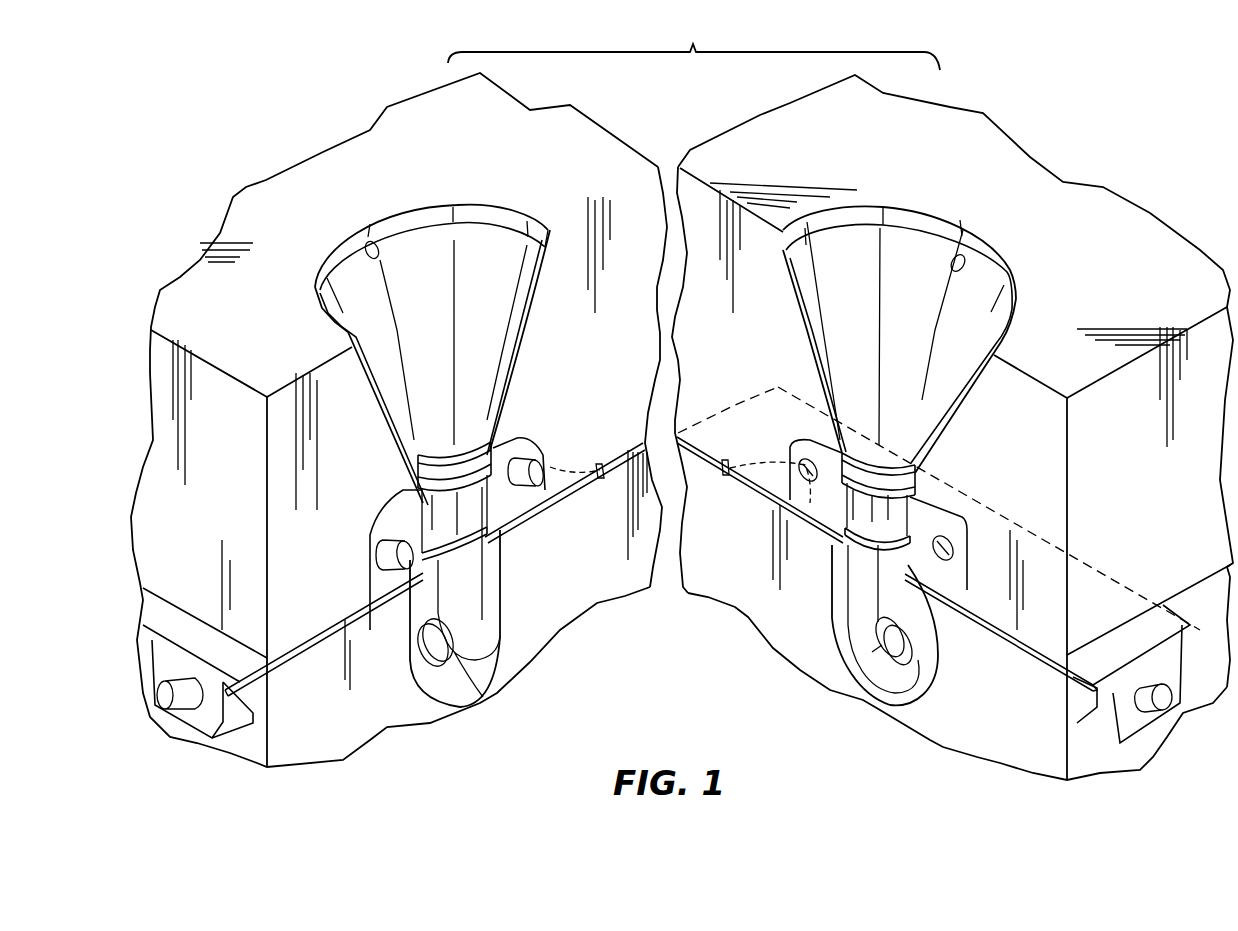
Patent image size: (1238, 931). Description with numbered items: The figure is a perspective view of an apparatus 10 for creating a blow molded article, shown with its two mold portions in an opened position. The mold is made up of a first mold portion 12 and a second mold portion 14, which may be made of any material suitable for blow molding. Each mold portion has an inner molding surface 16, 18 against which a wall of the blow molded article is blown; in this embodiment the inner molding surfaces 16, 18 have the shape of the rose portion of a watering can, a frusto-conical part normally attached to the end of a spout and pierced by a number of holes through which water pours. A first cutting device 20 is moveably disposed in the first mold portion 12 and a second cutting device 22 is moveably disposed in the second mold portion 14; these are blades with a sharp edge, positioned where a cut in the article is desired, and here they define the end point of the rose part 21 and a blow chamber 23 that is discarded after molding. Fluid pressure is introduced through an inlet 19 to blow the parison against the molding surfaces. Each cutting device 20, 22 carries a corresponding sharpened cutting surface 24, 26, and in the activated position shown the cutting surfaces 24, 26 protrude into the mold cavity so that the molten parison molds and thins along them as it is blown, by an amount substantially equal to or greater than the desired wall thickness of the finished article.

The mold assembly 10 is at (950, 94).
The first mold portion 12 is at (933, 517).
The second mold portion 14 is at (387, 577).
The inner molding surface 16 is at (893, 405).
The inner molding surface 18 is at (407, 450).
The inlet 19 is at (903, 655).
The first cutting device 20 is at (865, 507).
The rose part 21 is at (843, 350).
The second cutting device 22 is at (462, 510).
The blow chamber 23 is at (950, 690).
The sharpened cutting surface 24 is at (863, 547).
The sharpened cutting surface 26 is at (457, 540).